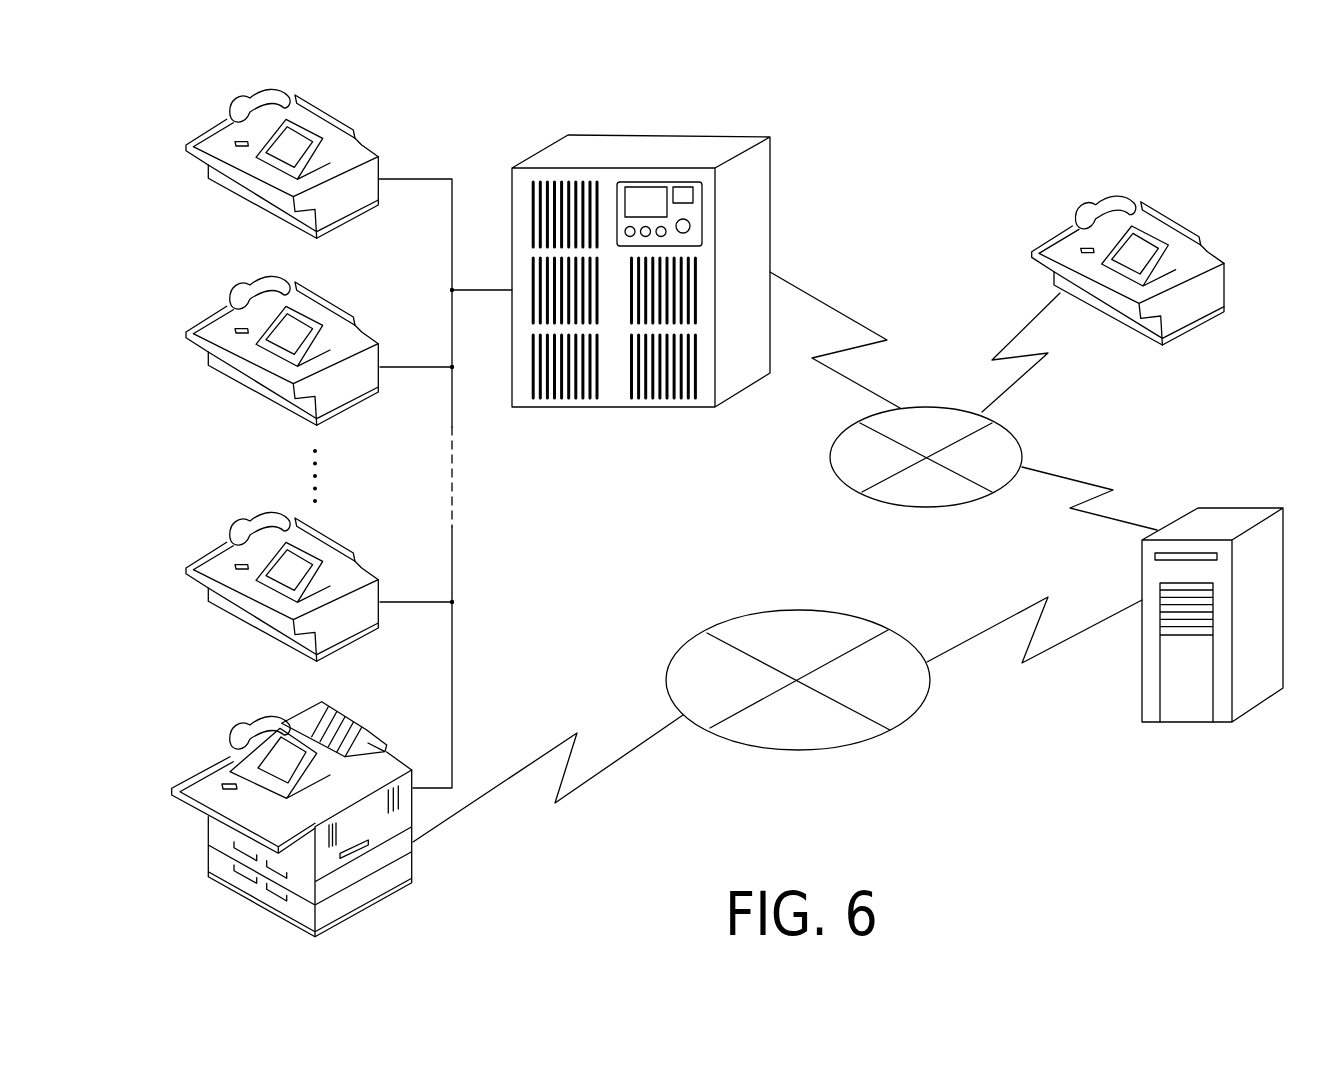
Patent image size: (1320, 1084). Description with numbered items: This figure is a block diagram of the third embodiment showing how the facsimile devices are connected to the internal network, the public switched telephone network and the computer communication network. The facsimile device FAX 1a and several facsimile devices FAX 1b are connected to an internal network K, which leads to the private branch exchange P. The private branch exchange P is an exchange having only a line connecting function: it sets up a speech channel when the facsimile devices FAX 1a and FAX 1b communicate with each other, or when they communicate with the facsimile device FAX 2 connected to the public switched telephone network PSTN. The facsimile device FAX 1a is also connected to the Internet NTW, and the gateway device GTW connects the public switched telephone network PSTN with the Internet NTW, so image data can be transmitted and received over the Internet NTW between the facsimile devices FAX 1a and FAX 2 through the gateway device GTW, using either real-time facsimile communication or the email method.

The facsimile device 1b is at (202, 558).
The facsimile device 1a is at (200, 768).
The facsimile device 2 is at (1230, 210).
The internal network K is at (416, 179).
The private branch exchange P is at (658, 150).
The public switched telephone network PSTN is at (830, 455).
The Internet NTW is at (780, 610).
The gateway device GTW is at (1252, 480).